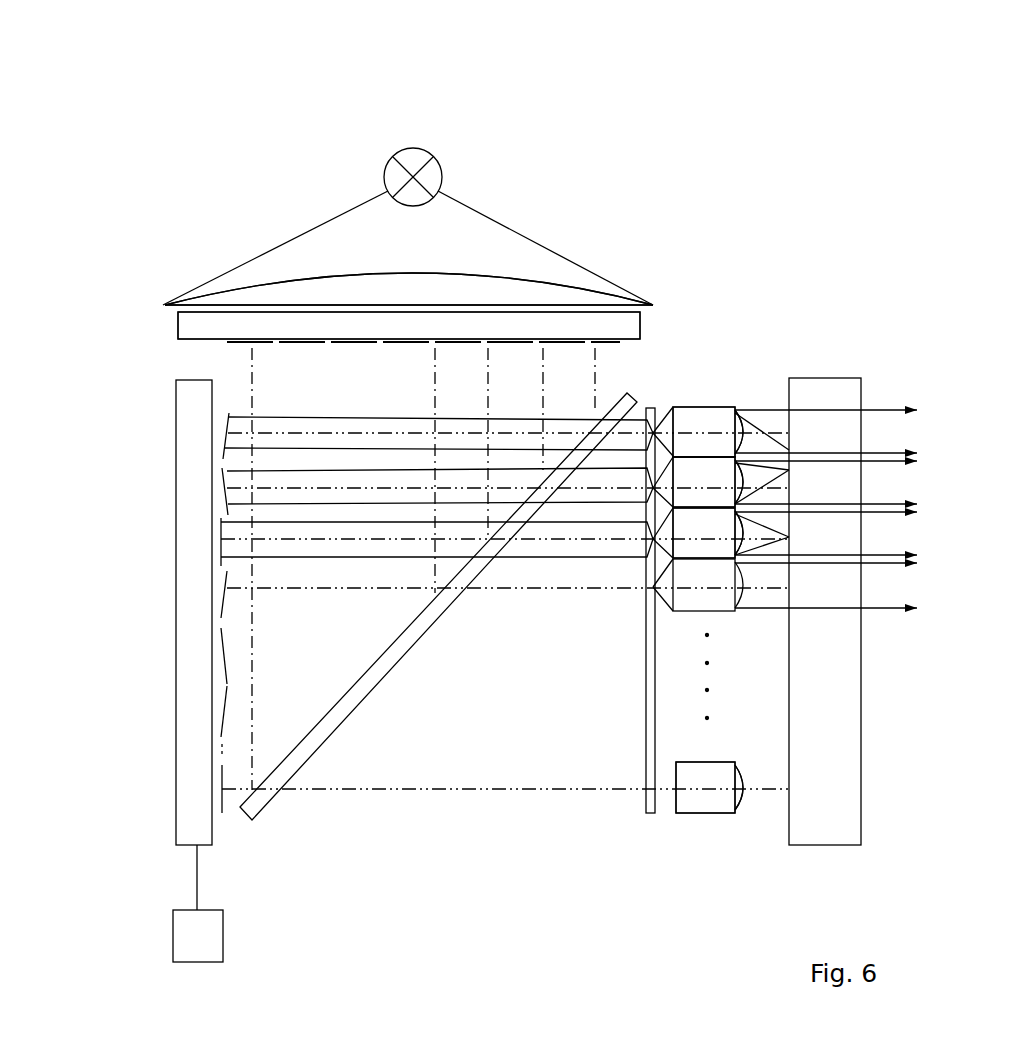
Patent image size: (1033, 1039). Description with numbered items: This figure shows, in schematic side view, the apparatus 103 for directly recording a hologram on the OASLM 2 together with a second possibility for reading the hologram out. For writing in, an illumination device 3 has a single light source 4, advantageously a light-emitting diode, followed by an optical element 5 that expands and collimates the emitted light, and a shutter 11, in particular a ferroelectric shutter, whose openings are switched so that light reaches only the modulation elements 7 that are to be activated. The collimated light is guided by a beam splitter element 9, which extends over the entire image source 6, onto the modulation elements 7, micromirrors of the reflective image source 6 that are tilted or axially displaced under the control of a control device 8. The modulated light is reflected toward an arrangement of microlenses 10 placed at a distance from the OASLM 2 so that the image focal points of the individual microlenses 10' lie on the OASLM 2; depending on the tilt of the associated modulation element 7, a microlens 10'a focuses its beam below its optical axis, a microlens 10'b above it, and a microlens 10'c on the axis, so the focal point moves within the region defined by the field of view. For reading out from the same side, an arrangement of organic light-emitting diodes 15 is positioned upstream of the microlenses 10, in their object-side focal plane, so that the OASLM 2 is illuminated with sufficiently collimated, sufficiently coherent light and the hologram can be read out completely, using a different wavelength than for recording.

The apparatus 103 is at (545, 167).
The illumination device 3 is at (202, 220).
The light source 4 is at (393, 177).
The optical element 5 is at (268, 293).
The shutter 11 is at (205, 327).
The modulation elements 7 is at (227, 430).
The image source 6 is at (193, 768).
The control device 8 is at (198, 936).
The beam splitter element 9 is at (632, 397).
The arrangement of organic light-emitting diodes 15 is at (650, 733).
The arrangement of microlenses 10 is at (698, 678).
The microlens 10' is at (742, 837).
The microlens 10'a is at (708, 432).
The microlens 10'b is at (708, 482).
The microlens 10'c is at (708, 533).
The OASLM 2 is at (793, 408).